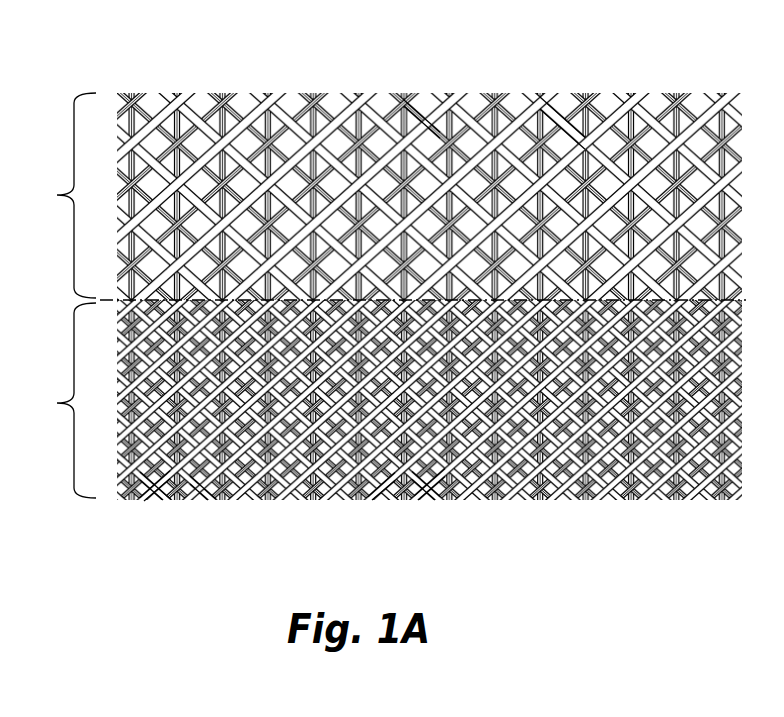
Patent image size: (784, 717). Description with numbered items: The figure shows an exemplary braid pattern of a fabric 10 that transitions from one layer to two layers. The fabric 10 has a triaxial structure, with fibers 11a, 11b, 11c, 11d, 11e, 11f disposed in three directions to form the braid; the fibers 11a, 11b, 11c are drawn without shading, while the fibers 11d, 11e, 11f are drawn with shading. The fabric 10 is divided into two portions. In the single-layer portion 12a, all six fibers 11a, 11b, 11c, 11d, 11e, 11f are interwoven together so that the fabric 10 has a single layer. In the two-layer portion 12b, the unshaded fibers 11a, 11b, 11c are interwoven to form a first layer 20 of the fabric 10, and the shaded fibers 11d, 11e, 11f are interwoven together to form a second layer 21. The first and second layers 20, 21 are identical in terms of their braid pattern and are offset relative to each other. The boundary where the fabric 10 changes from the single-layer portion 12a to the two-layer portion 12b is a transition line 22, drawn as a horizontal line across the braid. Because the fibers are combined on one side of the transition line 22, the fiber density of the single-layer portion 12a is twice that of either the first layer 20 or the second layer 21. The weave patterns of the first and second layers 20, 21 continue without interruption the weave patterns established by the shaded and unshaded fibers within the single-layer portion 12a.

The fabric 10 is at (379, 250).
The fiber 11a is at (150, 490).
The fiber 11b is at (163, 490).
The fiber 11c is at (210, 493).
The fiber 11d is at (376, 490).
The fiber 11e is at (423, 482).
The fiber 11f is at (433, 487).
The single-layer portion 12a is at (379, 400).
The two-layer portion 12b is at (379, 196).
The first layer 20 is at (557, 110).
The second layer 21 is at (417, 110).
The transition line 22 is at (97, 300).